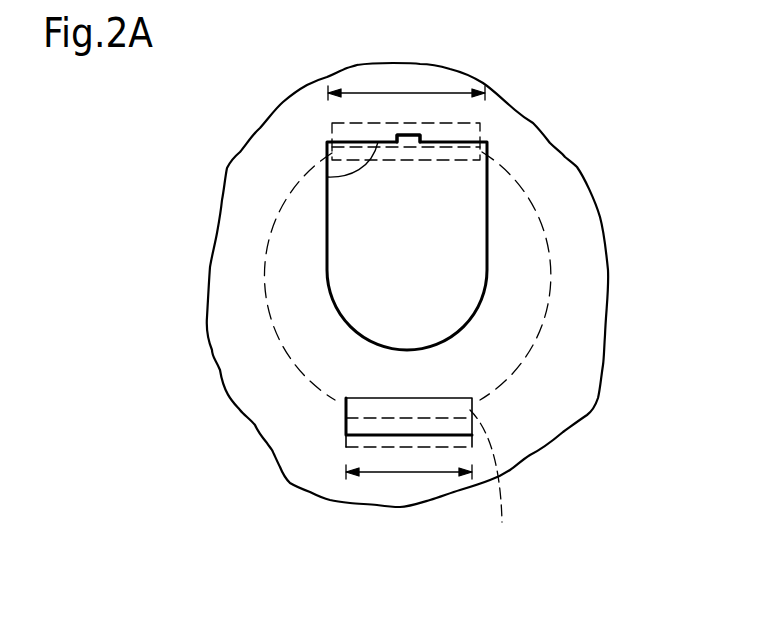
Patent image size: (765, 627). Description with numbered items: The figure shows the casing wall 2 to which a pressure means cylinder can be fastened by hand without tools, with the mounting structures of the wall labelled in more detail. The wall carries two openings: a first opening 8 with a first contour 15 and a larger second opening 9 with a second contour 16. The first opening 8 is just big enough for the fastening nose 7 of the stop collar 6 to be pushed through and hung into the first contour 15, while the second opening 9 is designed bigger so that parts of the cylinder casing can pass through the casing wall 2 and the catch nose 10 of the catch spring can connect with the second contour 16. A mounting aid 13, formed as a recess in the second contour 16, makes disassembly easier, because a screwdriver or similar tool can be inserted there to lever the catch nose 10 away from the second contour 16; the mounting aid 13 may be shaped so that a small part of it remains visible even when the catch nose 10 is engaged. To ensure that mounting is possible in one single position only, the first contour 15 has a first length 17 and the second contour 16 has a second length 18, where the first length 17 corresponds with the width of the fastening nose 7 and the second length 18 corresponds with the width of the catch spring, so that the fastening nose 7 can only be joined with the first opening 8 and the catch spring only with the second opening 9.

The casing wall 2 is at (559, 399).
The stop collar 6 is at (547, 252).
The fastening nose 7 is at (486, 485).
The first opening 8 is at (467, 412).
The second opening 9 is at (357, 315).
The catch nose 10 is at (360, 155).
The mounting aid 13 is at (420, 130).
The first contour 15 is at (388, 432).
The second contour 16 is at (327, 176).
The first length 17 is at (400, 478).
The second length 18 is at (395, 95).